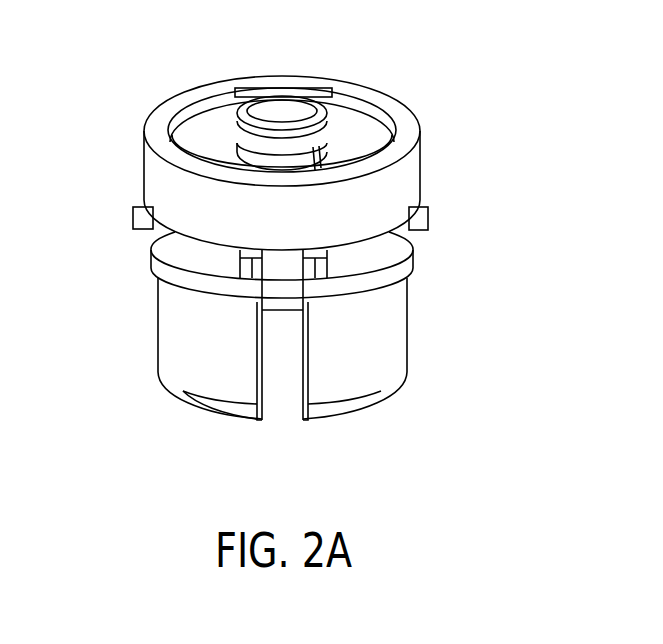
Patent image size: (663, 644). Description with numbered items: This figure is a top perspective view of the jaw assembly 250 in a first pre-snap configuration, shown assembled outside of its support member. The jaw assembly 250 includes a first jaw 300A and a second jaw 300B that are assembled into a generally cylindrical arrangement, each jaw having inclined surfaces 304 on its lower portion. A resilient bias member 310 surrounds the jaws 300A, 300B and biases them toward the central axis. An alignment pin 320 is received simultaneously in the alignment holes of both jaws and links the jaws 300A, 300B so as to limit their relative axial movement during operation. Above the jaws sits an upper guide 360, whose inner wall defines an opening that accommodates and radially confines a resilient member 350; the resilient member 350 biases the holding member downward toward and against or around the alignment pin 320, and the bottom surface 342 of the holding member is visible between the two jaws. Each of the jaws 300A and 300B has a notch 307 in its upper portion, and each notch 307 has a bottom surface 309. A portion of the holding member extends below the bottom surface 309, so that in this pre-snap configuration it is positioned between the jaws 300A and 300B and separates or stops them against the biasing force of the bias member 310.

The jaw assembly 250 is at (428, 94).
The upper guide 360 is at (132, 168).
The resilient member 350 is at (282, 95).
The alignment pin 320 is at (428, 212).
The resilient bias member 310 is at (412, 257).
The notch 307 is at (245, 257).
The bottom surface 309 is at (250, 270).
The first jaw 300A is at (158, 347).
The second jaw 300B is at (405, 350).
The inclined surfaces 304 is at (242, 407).
The bottom surface 342 is at (278, 313).